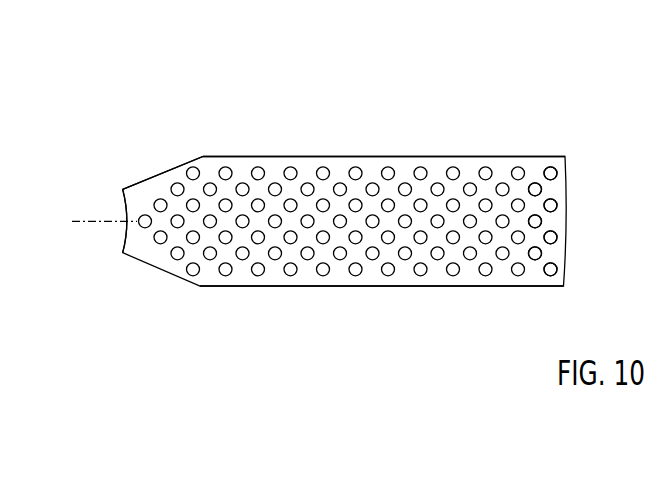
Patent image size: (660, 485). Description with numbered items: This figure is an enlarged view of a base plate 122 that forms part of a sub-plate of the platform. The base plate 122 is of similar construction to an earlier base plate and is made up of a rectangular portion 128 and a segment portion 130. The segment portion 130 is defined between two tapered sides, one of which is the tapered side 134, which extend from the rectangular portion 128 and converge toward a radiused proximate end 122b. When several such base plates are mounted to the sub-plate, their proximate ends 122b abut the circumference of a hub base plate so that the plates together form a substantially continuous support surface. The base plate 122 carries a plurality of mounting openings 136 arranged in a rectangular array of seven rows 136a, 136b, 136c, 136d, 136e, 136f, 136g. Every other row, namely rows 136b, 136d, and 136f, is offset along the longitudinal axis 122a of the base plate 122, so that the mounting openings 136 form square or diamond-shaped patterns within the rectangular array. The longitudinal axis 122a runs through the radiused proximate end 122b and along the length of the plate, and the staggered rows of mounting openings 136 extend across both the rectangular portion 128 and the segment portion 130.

The base plate 122 is at (367, 123).
The longitudinal axis 122a is at (82, 218).
The radiused proximate end 122b is at (118, 237).
The rectangular portion 128 is at (375, 288).
The segment portion 130 is at (147, 181).
The tapered side 134 is at (182, 167).
The mounting openings 136 is at (454, 167).
The first row of mounting openings 136a is at (554, 170).
The second row of mounting openings 136b is at (541, 190).
The third row of mounting openings 136c is at (555, 208).
The fourth row of mounting openings 136d is at (541, 224).
The fifth row of mounting openings 136e is at (554, 242).
The sixth row of mounting openings 136f is at (553, 276).
The seventh row of mounting openings 136g is at (534, 260).